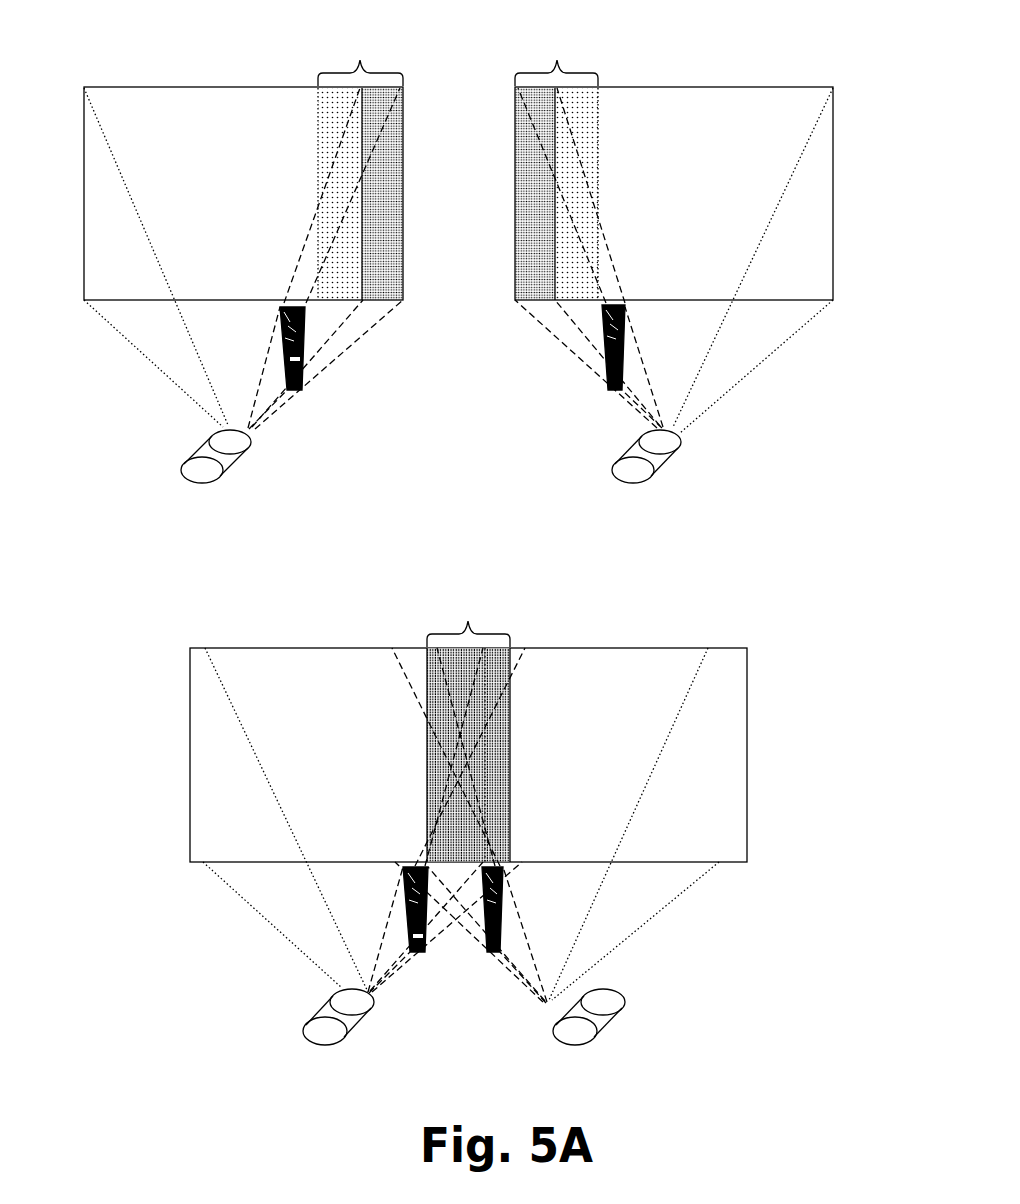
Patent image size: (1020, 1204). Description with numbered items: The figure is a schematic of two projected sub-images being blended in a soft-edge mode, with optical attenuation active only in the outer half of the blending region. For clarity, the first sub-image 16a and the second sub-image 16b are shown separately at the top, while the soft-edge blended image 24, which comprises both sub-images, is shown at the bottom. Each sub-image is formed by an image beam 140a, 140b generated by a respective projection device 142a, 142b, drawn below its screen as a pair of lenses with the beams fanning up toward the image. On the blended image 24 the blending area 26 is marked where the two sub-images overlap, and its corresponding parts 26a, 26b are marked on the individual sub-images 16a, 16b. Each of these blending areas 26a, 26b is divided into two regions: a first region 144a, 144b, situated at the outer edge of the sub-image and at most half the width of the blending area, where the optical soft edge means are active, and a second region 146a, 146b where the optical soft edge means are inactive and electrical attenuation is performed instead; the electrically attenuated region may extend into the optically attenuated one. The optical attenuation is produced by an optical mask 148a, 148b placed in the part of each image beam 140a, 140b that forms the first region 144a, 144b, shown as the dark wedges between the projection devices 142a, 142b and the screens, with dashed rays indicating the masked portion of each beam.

The first sub-image 16a is at (167, 87).
The second sub-image 16b is at (752, 87).
The blended image 24 is at (663, 648).
The blending area 26 is at (468, 727).
The blending area of first sub-image 26a is at (360, 58).
The blending area of second sub-image 26b is at (556, 59).
The first image beam 140a is at (156, 257).
The second image beam 140b is at (753, 260).
The first projection device 142a is at (300, 743).
The second projection device 142b is at (640, 743).
The first region of blending area of first sub-image 144a is at (386, 194).
The first region of blending area of second sub-image 144b is at (530, 194).
The second region of blending area of first sub-image 146a is at (340, 195).
The second region of blending area of second sub-image 146b is at (582, 196).
The first optical mask 148a is at (292, 360).
The second optical mask 148b is at (607, 377).